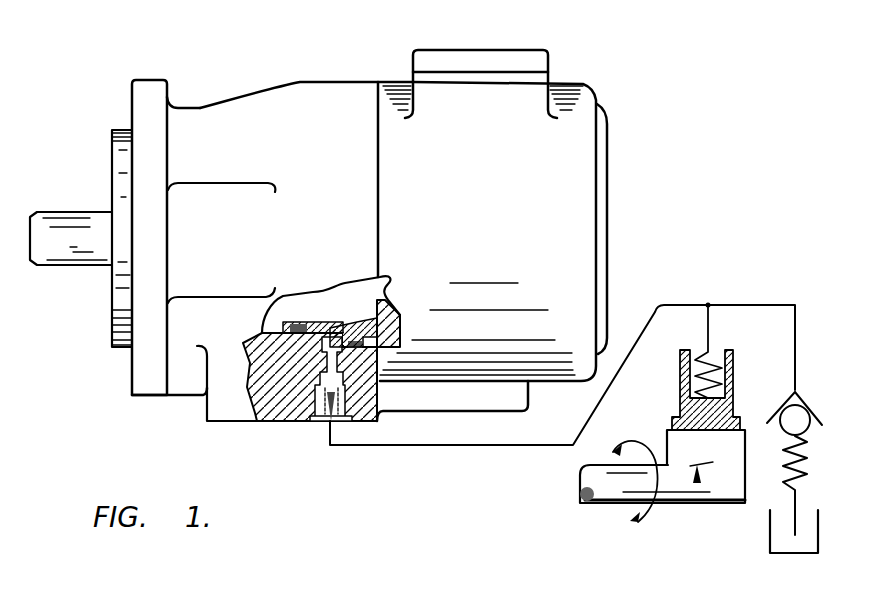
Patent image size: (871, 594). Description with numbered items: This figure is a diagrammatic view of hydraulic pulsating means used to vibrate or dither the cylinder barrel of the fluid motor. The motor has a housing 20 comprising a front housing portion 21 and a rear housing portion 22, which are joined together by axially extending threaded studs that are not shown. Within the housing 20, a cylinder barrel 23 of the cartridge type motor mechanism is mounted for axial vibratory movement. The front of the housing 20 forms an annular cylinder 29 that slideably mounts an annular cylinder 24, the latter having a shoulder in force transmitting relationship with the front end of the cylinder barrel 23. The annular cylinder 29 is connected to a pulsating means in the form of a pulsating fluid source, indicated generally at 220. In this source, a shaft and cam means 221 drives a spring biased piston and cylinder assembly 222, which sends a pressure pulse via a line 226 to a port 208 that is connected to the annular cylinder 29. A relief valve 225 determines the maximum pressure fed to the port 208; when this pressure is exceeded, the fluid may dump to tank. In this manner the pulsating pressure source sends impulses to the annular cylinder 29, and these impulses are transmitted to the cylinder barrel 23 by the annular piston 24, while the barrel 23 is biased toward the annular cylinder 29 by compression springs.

The housing 20 is at (262, 62).
The front housing portion 21 is at (152, 381).
The rear housing portion 22 is at (597, 98).
The cylinder barrel 23 is at (341, 297).
The annular cylinder 24 is at (315, 320).
The annular cylinder 29 is at (318, 337).
The port 208 is at (324, 412).
The line 226 is at (437, 447).
The spring biased piston and cylinder assembly 222 is at (680, 355).
The pulsating fluid source 220 is at (695, 478).
The shaft and cam means 221 is at (597, 505).
The relief valve 225 is at (818, 380).